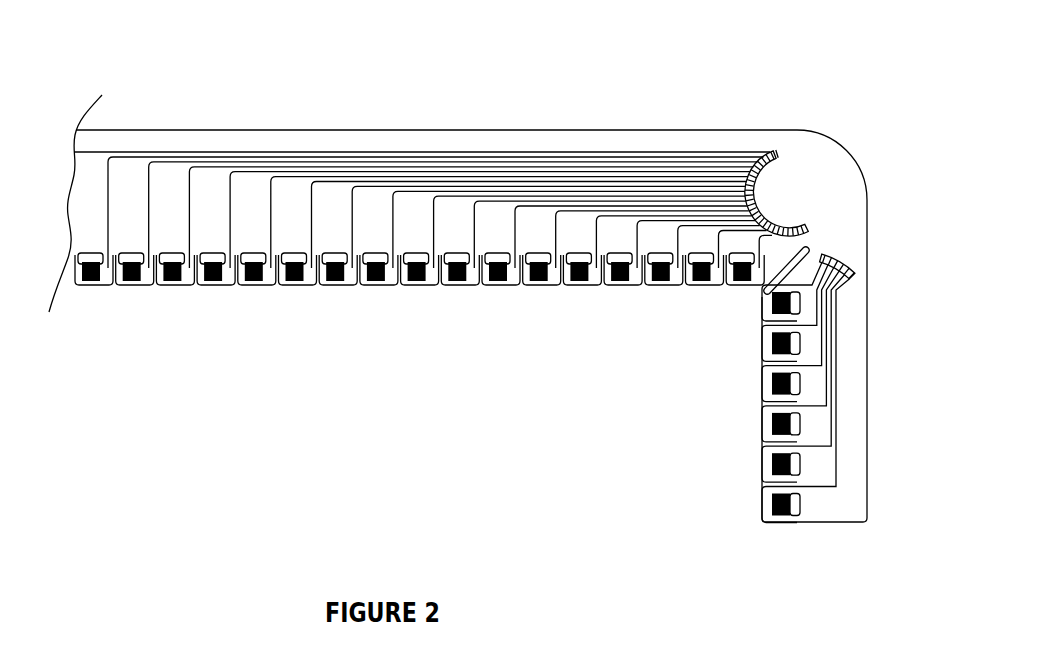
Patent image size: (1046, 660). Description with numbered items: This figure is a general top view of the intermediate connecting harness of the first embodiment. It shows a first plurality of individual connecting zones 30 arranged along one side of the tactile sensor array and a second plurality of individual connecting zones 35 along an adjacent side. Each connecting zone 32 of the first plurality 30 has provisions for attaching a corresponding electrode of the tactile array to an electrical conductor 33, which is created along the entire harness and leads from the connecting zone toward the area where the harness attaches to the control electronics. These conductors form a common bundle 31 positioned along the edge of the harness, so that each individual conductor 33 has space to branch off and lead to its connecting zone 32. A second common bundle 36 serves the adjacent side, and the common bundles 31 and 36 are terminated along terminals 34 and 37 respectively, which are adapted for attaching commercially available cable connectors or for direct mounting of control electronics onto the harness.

The first plurality of individual connecting zones 30 is at (418, 301).
The common bundle 31 is at (677, 157).
The connecting zone 32 is at (227, 285).
The electrical conductor 33 is at (225, 203).
The terminal 34 is at (784, 203).
The second plurality of individual connecting zones 35 is at (733, 406).
The common bundle 36 is at (836, 374).
The terminal 37 is at (830, 263).